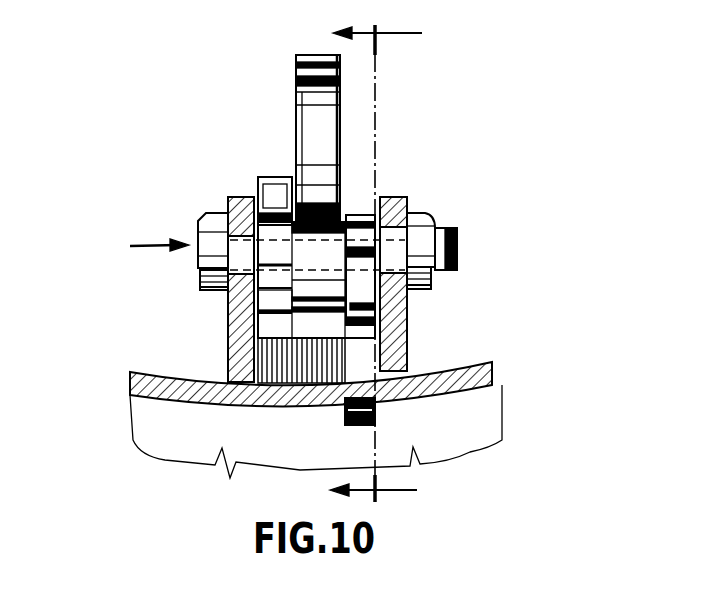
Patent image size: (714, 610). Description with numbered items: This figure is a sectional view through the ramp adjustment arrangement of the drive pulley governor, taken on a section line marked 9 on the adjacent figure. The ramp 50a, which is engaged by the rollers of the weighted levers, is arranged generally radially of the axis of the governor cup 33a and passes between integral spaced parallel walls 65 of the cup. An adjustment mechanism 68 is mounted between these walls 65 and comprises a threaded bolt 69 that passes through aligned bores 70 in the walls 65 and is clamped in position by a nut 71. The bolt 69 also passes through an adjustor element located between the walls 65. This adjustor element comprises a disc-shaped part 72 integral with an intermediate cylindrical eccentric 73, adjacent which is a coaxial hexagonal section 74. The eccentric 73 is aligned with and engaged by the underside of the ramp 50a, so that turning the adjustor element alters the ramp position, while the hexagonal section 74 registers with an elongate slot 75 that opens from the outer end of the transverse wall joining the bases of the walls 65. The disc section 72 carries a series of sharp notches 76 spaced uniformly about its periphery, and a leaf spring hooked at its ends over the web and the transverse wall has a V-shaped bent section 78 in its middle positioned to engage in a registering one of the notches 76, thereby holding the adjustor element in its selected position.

The section line 9- 9 is at (376, 261).
The governor cup 33a is at (130, 383).
The ramp 50a is at (300, 73).
The spaced parallel walls 65 is at (233, 194).
The adjustment mechanism 68 is at (139, 251).
The threaded bolt 69 is at (204, 245).
The aligned bores 70 is at (196, 272).
The nut 71 is at (418, 243).
The disc-shaped part 72 is at (270, 177).
The intermediate cylindrical eccentric 73 is at (322, 192).
The coaxial hexagonal section 74 is at (353, 217).
The elongate slot 75 is at (377, 413).
The sharp notches 76 is at (228, 295).
The V-shaped bent section 78 is at (262, 328).